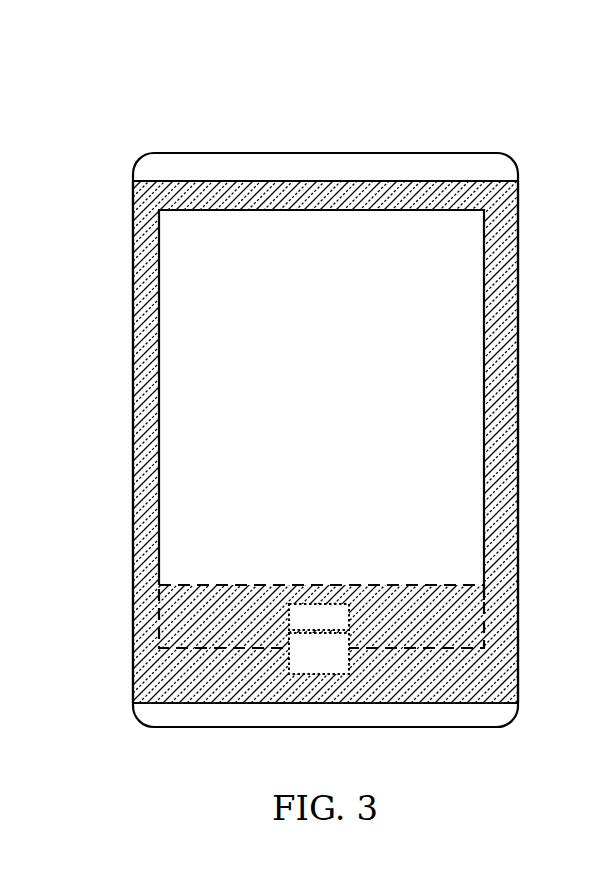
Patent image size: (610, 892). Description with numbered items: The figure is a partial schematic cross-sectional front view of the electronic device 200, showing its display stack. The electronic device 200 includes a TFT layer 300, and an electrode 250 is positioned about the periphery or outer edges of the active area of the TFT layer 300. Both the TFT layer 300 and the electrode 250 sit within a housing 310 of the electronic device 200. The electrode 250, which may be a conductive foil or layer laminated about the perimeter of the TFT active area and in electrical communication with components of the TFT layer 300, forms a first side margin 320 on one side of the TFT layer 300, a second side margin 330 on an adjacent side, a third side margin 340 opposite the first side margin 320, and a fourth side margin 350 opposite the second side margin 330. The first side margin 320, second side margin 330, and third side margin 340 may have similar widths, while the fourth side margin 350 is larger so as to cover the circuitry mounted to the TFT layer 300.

The electronic device 200 is at (550, 50).
The electrode 250 is at (482, 203).
The TFT layer 300 is at (391, 232).
The housing 310 is at (352, 165).
The first side margin 320 is at (144, 275).
The second side margin 330 is at (284, 193).
The third side margin 340 is at (499, 395).
The fourth side margin 350 is at (225, 625).